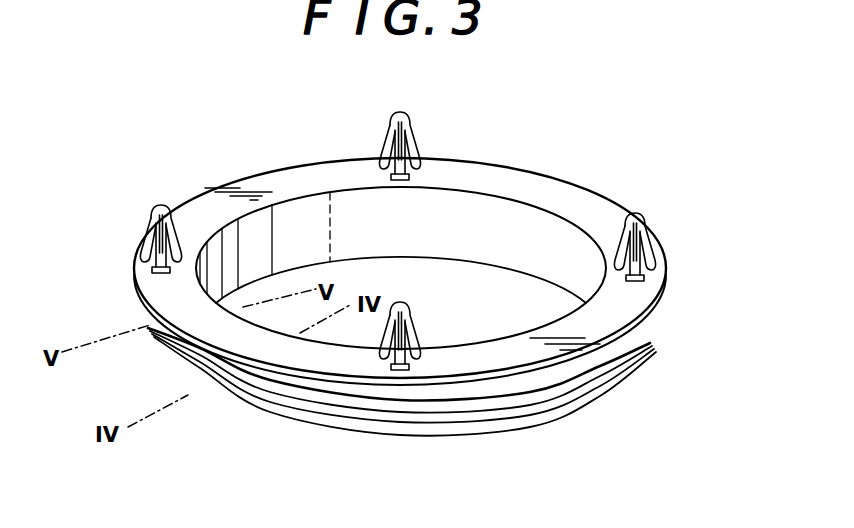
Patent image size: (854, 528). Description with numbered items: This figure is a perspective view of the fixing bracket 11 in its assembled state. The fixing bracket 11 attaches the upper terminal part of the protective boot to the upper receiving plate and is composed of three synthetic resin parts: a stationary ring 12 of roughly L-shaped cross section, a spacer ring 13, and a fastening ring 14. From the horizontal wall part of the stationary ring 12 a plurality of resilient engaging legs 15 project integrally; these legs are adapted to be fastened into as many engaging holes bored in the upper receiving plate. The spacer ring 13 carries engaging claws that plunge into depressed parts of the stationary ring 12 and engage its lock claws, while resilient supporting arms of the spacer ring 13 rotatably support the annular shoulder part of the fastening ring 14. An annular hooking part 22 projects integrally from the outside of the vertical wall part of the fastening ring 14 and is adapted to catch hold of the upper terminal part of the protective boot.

The fixing bracket 11 is at (421, 286).
The stationary ring 12 is at (530, 187).
The spacer ring 13 is at (333, 386).
The fastening ring 14 is at (422, 436).
The resilient engaging legs 15 is at (392, 116).
The annular hooking part 22 is at (490, 417).